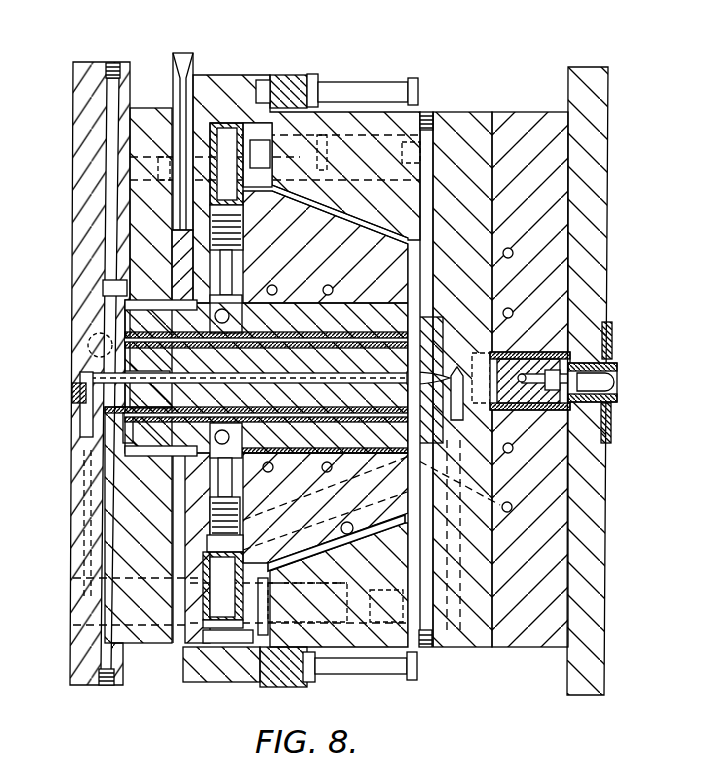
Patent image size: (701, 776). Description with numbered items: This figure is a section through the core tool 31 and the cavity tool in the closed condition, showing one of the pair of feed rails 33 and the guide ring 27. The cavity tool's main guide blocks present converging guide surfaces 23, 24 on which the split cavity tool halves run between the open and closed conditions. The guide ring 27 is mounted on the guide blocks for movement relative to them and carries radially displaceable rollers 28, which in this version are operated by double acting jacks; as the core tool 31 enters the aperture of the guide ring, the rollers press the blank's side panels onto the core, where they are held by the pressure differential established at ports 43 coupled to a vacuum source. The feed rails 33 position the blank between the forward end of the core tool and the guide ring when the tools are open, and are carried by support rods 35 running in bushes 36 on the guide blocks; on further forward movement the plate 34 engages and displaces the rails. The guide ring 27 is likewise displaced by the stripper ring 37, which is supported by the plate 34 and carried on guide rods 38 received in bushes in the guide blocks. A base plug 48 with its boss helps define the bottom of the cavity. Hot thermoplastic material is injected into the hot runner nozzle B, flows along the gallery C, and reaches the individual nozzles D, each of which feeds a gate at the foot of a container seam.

The converging guide surface 23 is at (352, 538).
The converging guide surface 24 is at (361, 242).
The guide ring 27 is at (233, 150).
The rollers 28 is at (238, 462).
The core tool 31 is at (371, 360).
The feed rail 33 is at (181, 62).
The plate 34 is at (153, 287).
The support rod 35 is at (385, 88).
The bush 36 is at (291, 75).
The stripper ring 37 is at (243, 290).
The guide rod 38 is at (427, 160).
The port 43 is at (312, 452).
The base plug 48 is at (423, 332).
The hot runner nozzle B is at (580, 363).
The gallery C is at (525, 377).
The individual nozzle D is at (458, 337).